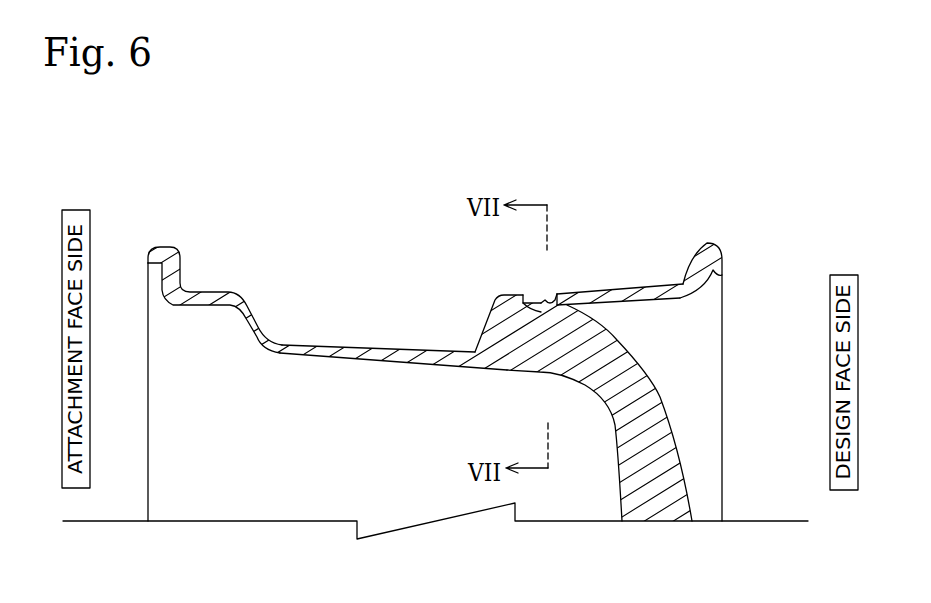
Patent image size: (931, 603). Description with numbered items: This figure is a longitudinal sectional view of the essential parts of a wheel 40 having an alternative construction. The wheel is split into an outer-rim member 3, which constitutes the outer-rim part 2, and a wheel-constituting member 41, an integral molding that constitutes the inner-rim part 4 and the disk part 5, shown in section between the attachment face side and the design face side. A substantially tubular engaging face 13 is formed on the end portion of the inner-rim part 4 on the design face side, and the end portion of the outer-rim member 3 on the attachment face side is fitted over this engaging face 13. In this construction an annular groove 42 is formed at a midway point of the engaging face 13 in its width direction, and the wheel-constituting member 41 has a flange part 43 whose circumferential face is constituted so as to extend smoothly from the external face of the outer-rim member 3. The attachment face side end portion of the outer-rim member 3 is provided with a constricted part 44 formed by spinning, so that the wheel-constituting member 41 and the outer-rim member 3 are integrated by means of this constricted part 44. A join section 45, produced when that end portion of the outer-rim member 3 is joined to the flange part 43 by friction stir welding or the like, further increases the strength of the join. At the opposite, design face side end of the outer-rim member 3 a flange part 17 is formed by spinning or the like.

The outer-rim part 2 is at (623, 293).
The outer-rim member 3 is at (755, 255).
The inner-rim part 4 is at (333, 343).
The disk part 5 is at (680, 392).
The engaging face 13 is at (568, 293).
The flange part 17 is at (712, 242).
The wheel 40 is at (681, 213).
The wheel-constituting member 41 is at (290, 277).
The annular groove 42 is at (527, 313).
The flange part 43 is at (492, 310).
The constricted part 44 is at (548, 296).
The join section 45 is at (522, 296).